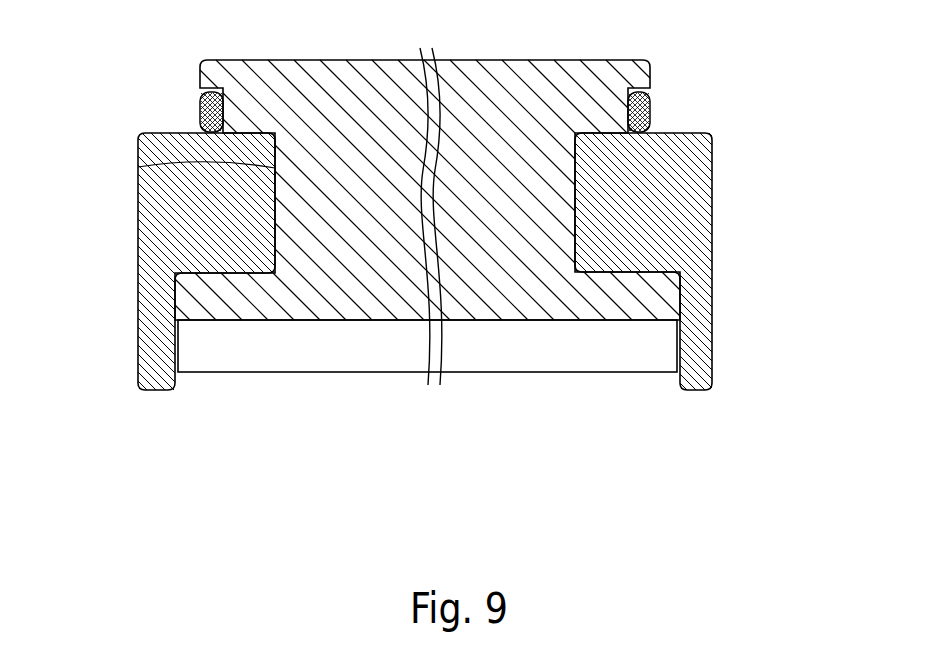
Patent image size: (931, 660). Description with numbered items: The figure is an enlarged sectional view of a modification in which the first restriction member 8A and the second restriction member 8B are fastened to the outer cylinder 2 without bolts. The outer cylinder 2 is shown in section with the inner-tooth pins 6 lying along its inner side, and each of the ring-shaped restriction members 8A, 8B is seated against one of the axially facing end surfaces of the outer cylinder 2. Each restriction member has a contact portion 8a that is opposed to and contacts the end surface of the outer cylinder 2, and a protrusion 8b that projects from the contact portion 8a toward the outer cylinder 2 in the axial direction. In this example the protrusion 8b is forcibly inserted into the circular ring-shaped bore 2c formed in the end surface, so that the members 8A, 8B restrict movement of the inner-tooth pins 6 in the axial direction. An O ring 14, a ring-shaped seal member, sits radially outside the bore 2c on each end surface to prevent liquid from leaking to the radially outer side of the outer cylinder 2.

The outer cylinder 2 is at (603, 67).
The bore 2c is at (138, 167).
The inner-tooth pins 6 is at (513, 352).
The first restriction member 8A is at (712, 166).
The second restriction member 8B is at (160, 213).
The contact portion 8a is at (138, 353).
The protrusion 8b is at (237, 248).
The O ring 14 is at (200, 99).